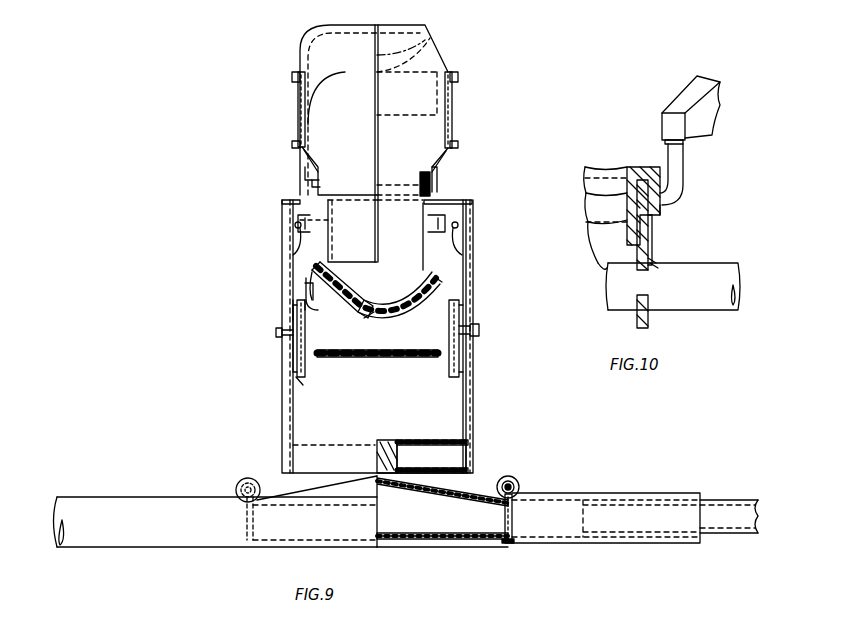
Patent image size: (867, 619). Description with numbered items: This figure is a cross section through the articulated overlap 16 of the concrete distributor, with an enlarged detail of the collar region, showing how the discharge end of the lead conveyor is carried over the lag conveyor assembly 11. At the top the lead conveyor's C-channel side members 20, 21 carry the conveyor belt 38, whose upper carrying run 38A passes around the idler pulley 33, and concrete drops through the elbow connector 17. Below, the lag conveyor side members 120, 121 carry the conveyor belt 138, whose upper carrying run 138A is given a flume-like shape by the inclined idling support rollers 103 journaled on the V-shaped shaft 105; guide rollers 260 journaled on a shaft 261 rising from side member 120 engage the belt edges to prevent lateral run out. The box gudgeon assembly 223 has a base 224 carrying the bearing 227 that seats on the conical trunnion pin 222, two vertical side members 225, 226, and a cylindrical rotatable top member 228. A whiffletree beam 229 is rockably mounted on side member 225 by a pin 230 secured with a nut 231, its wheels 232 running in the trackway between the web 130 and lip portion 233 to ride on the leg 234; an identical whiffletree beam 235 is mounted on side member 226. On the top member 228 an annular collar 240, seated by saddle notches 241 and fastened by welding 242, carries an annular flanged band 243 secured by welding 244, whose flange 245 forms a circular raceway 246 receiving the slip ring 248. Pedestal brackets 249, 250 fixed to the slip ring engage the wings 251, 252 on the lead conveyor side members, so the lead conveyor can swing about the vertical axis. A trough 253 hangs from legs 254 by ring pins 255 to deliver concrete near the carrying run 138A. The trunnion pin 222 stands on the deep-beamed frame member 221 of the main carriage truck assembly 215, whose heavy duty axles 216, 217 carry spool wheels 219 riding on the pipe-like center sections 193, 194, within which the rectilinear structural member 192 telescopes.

In FIG. 9, the lag conveyor assembly 11 is at (368, 392).
In FIG. 9, the articulated overlap 16 is at (205, 183).
In FIG. 9, the elbow connector 17 is at (345, 75).
In FIG. 9, the longitudinal C-channel structural side member 20 is at (297, 105).
In FIG. 9, the longitudinal C-channel structural side member 21 is at (455, 120).
In FIG. 9, the idler pulley 33 is at (449, 73).
In FIG. 9, the conveyor belt 38 is at (428, 120).
In FIG. 9, the upper carrying run 38A is at (432, 46).
In FIG. 9, the idling support rollers 103 is at (370, 306).
In FIG. 9, the V-shaped shaft 105 is at (374, 314).
In FIG. 9, the longitudinal C-channel structural side member 120 is at (305, 382).
In FIG. 9, the longitudinal C-channel structural side member 121 is at (448, 380).
In FIG. 9, the web 130 is at (306, 365).
In FIG. 9, the conveyor belt 138 is at (358, 357).
In FIG. 9, the upper carrying run 138A is at (442, 282).
In FIG. 9, the rectilinear structural member 192 is at (752, 536).
In FIG. 9, the pipe-like center section 193 is at (165, 530).
In FIG. 9, the pipe-like center section 194 is at (682, 545).
In FIG. 9, the main carriage truck assembly 215 is at (480, 482).
In FIG. 9, the heavy duty axle 216 is at (515, 525).
In FIG. 9, the heavy duty axle 217 is at (240, 540).
In FIG. 9, the spool roller or wheel 219 is at (237, 484).
In FIG. 9, the deep-beamed frame member 221 is at (445, 520).
In FIG. 9, the conical trunnion pin 222 is at (388, 440).
In FIG. 9, the box gudgeon assembly 223 is at (280, 430).
In FIG. 9, the base 224 is at (455, 437).
In FIG. 9, the vertical side member 225 is at (290, 394).
In FIG. 9, the vertical side member 226 is at (470, 408).
In FIG. 9, the bearing 227 is at (399, 458).
In FIG. 9, the top member 228 is at (282, 203).
In FIG. 10, the top member 228 is at (673, 286).
In FIG. 9, the whiffletree beam 229 is at (297, 345).
In FIG. 9, the pin 230 is at (280, 336).
In FIG. 9, the nut 231 is at (278, 330).
In FIG. 9, the wheel 232 is at (293, 312).
In FIG. 9, the lip portion 233 is at (300, 300).
In FIG. 9, the leg 234 is at (305, 283).
In FIG. 9, the whiffletree beam 235 is at (476, 324).
In FIG. 9, the annular collar 240 is at (472, 203).
In FIG. 10, the annular collar 240 is at (653, 243).
In FIG. 10, the saddle notch 241 is at (656, 266).
In FIG. 10, the welding 242 is at (640, 272).
In FIG. 10, the annular flanged band 243 is at (615, 207).
In FIG. 10, the welding 244 is at (615, 245).
In FIG. 10, the flange 245 is at (643, 165).
In FIG. 10, the circular raceway 246 is at (600, 186).
In FIG. 9, the slip ring 248 is at (432, 190).
In FIG. 10, the slip ring 248 is at (661, 216).
In FIG. 9, the pedestal bracket 249 is at (438, 177).
In FIG. 10, the pedestal bracket 249 is at (684, 175).
In FIG. 9, the pedestal bracket 250 is at (309, 180).
In FIG. 9, the wing 251 is at (445, 165).
In FIG. 10, the wing 251 is at (712, 132).
In FIG. 9, the wing 252 is at (303, 162).
In FIG. 9, the trough 253 is at (410, 254).
In FIG. 9, the leg 254 is at (298, 222).
In FIG. 9, the ring pin 255 is at (296, 229).
In FIG. 9, the guide roller 260 is at (314, 268).
In FIG. 9, the shaft 261 is at (295, 305).